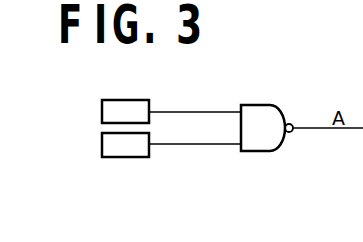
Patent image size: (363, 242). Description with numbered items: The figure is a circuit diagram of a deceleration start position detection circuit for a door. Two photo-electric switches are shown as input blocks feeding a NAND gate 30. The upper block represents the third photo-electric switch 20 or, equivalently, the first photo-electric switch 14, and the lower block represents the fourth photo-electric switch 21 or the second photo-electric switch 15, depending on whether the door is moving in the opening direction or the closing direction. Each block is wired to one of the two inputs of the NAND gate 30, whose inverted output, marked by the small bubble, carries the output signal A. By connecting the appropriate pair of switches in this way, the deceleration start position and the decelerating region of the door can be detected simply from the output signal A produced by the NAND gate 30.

The third photo-electric switch 20 is at (120, 89).
The first photo-electric switch 14 is at (115, 103).
The fourth photo-electric switch 21 is at (117, 164).
The second photo-electric switch 15 is at (112, 157).
The NAND gate 30 is at (263, 112).